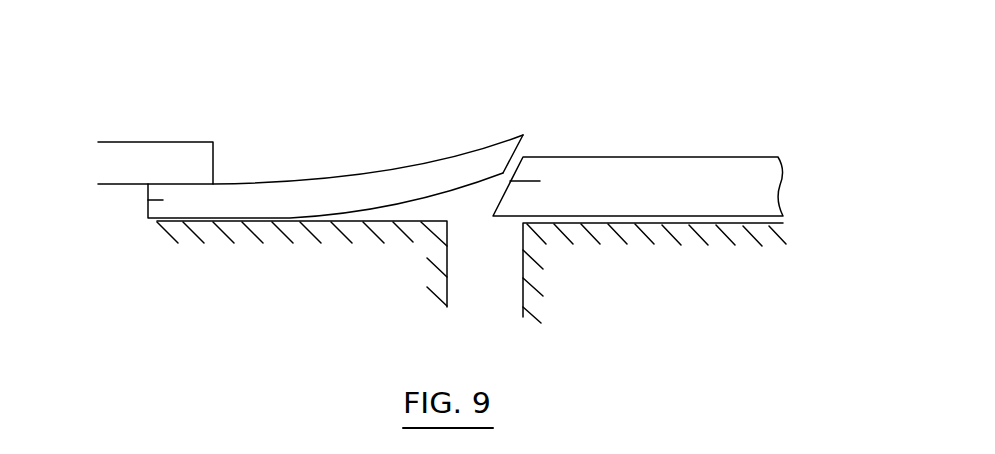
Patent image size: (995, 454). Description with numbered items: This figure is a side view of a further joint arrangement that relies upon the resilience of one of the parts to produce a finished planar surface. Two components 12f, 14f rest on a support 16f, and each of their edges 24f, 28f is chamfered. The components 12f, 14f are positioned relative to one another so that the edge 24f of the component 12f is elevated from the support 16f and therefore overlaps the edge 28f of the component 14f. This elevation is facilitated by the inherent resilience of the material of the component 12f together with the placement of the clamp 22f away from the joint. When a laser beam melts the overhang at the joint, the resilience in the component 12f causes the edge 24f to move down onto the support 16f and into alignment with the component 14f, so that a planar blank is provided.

The component 12f is at (370, 183).
The component 14f is at (697, 172).
The support 16f is at (392, 235).
The clamp 22f is at (187, 153).
The edge 24f is at (512, 158).
The edge 28f is at (540, 181).